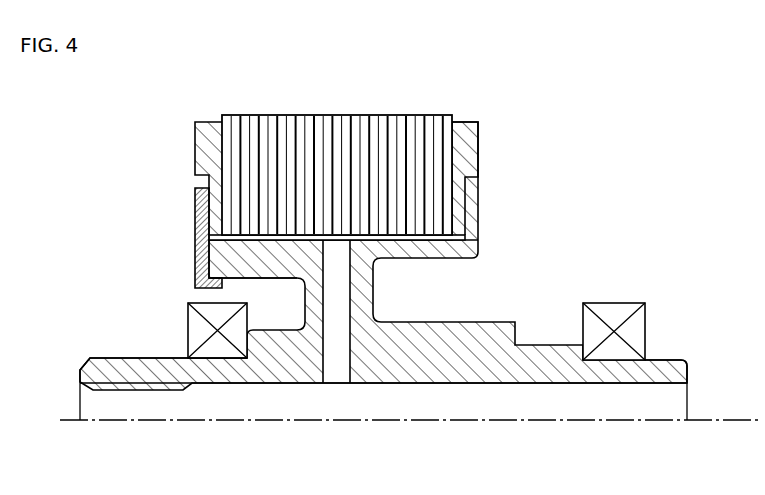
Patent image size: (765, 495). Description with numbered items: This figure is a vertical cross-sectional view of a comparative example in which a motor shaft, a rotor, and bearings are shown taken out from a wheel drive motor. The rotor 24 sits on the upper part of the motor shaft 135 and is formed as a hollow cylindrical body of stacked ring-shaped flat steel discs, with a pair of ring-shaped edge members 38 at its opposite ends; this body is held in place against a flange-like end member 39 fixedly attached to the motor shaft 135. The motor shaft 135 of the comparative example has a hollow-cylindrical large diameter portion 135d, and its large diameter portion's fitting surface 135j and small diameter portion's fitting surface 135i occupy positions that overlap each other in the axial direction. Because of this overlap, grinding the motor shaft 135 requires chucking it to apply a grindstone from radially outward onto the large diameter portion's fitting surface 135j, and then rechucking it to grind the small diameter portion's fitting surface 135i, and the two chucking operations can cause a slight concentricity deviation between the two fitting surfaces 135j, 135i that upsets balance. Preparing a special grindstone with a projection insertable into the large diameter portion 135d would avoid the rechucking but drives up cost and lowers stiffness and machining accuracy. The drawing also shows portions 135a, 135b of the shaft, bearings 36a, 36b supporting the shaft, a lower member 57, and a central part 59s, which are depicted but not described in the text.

The rotor 24 is at (238, 128).
The edge member 38 is at (208, 142).
The end member 39 is at (200, 206).
The motor shaft 135 is at (504, 319).
The base portion 135a is at (650, 370).
The outer flange portion 135b is at (111, 373).
The large diameter portion 135d is at (220, 262).
The small diameter portion's fitting surface 135i is at (213, 358).
The large diameter portion's fitting surface 135j is at (248, 238).
The bearing 36a is at (616, 312).
The bearing 36b is at (207, 305).
The base plate 57 is at (667, 403).
The shaft 59s is at (340, 372).